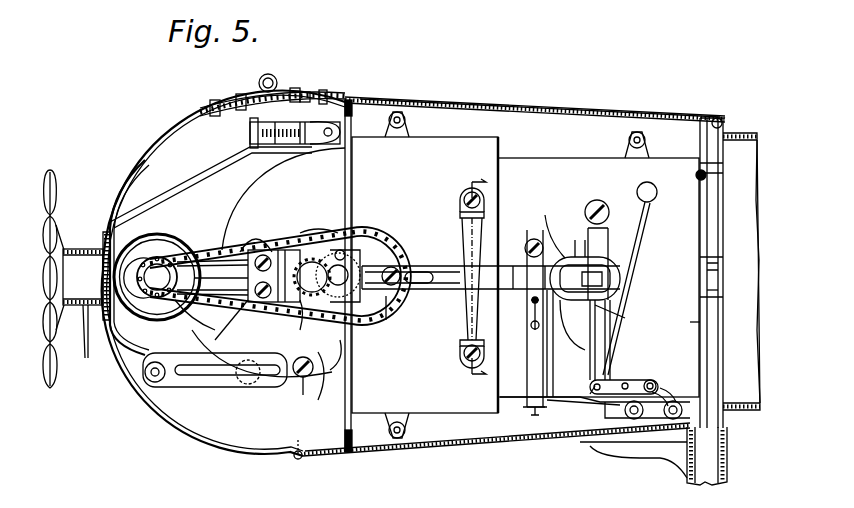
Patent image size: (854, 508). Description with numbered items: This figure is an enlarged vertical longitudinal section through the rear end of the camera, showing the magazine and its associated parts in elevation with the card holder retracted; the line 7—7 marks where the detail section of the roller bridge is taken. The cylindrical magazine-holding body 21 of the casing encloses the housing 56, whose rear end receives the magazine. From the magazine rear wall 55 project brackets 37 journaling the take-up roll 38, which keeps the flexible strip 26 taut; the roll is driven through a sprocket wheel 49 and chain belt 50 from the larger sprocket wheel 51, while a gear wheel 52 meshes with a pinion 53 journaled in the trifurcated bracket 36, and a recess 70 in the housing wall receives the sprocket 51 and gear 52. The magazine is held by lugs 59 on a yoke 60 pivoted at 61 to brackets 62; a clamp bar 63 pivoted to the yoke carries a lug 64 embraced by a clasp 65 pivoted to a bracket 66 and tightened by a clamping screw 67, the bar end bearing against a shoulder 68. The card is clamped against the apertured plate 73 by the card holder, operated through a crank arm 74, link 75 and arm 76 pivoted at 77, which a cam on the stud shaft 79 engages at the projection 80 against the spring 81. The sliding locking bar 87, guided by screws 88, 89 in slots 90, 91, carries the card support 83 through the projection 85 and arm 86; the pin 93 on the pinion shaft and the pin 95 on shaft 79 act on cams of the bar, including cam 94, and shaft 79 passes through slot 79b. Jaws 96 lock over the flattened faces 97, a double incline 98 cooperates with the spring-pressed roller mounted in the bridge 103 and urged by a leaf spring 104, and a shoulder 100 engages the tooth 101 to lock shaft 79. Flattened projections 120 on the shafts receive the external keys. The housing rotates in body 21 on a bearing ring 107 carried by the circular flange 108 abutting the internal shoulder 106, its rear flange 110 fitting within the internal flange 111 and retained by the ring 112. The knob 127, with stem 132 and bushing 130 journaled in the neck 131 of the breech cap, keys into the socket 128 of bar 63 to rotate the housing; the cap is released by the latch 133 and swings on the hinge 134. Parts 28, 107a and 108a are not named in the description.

The section line 7— 7 is at (472, 279).
The magazine holding portion or body 21 is at (470, 100).
The flexible strip 26 is at (726, 452).
The housing 28 is at (165, 120).
The trifurcated bracket 36 is at (270, 306).
The arms or brackets 37 is at (200, 262).
The take-up roll 38 is at (186, 236).
The sprocket wheel 49 is at (180, 306).
The chain belt 50 is at (270, 250).
The larger sprocket wheel 51 is at (375, 258).
The gear wheel 52 is at (348, 260).
The pinion 53 is at (298, 240).
The rear wall of the magazine 55 is at (262, 200).
The housing 56 is at (438, 148).
The lugs 59 is at (253, 386).
The yoke 60 is at (246, 378).
The pivot 61 is at (300, 380).
The brackets 62 is at (322, 402).
The clamp bar 63 is at (128, 190).
The lug 64 is at (272, 74).
The clasp 65 is at (250, 100).
The bracket 66 is at (305, 92).
The clamping screw 67 is at (250, 137).
The shoulder 68 is at (326, 137).
The recess 70 is at (388, 318).
The plate 73 is at (724, 228).
The crank arm 74 is at (660, 392).
The link 75 is at (628, 380).
The arm 76 is at (600, 306).
The pivot 77 is at (600, 200).
The stud shaft 79 is at (594, 385).
The slot 79b is at (700, 330).
The projection 80 is at (560, 300).
The spring 81 is at (636, 257).
The automatic support 83 is at (572, 408).
The laterally extending projection 85 is at (528, 412).
The arm 86 is at (548, 363).
The sliding bar 87 is at (446, 290).
The stud or screw 88 is at (410, 265).
The stud or screw 89 is at (510, 266).
The slot 90 is at (422, 271).
The slot 91 is at (527, 328).
The pin 93 is at (305, 301).
The cam 94 is at (554, 320).
The pin 95 is at (572, 258).
The bifurcations or jaws 96 is at (338, 250).
The flattened faces 97 is at (314, 258).
The double incline 98 is at (342, 352).
The shoulder 100 is at (600, 268).
The tooth 101 is at (588, 252).
The bridge 103 is at (462, 200).
The leaf spring 104 is at (460, 350).
The internal shoulder 106 is at (718, 116).
The bearing ring 107 is at (718, 194).
The pin 107a is at (718, 286).
The circular flange 108 is at (700, 125).
The frame bar 108a is at (707, 268).
The surrounding flange 110 is at (353, 110).
The internal flange 111 is at (352, 104).
The ring 112 is at (348, 98).
The flattened projections 120 is at (188, 398).
The knob 127 is at (49, 388).
The slot or socket 128 is at (172, 236).
The bushing 130 is at (86, 345).
The neck 131 is at (79, 250).
The stem 132 is at (63, 280).
The latch 133 is at (323, 90).
The hinge 134 is at (298, 460).